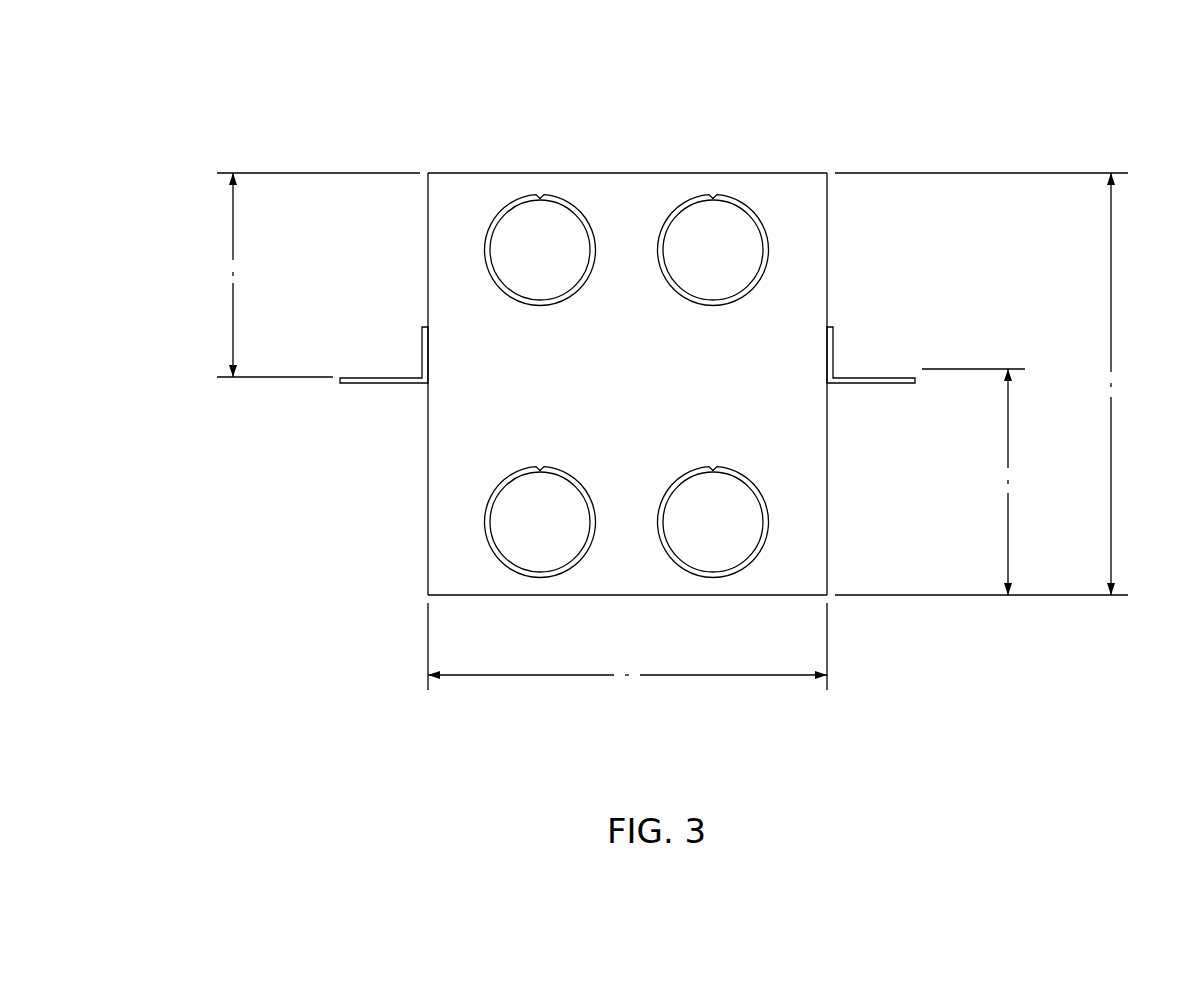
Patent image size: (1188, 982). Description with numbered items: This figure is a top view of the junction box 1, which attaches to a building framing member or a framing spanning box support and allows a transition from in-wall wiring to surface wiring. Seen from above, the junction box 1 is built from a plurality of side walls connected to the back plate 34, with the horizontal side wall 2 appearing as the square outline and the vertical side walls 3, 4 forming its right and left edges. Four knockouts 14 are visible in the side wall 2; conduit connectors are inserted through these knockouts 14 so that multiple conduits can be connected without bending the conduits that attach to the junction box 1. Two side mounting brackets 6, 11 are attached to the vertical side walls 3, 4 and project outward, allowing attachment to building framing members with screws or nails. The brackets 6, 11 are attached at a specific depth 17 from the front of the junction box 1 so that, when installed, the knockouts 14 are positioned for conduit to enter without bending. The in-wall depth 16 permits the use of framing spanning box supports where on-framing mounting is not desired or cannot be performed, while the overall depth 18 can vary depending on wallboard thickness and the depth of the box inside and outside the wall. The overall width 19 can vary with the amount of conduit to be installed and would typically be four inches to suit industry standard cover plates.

The junction box 1 is at (829, 170).
The side wall 2 is at (590, 388).
The vertical side wall 3 is at (833, 490).
The vertical side wall 4 is at (427, 489).
The side mounting bracket 6 is at (888, 384).
The side mounting bracket 11 is at (358, 384).
The knockouts 14 is at (540, 250).
The in-wall depth 16 is at (228, 248).
The depth of mounting brackets 17 is at (1013, 456).
The overall depth 18 is at (1117, 352).
The overall width 19 is at (655, 676).
The back plate 34 is at (635, 171).